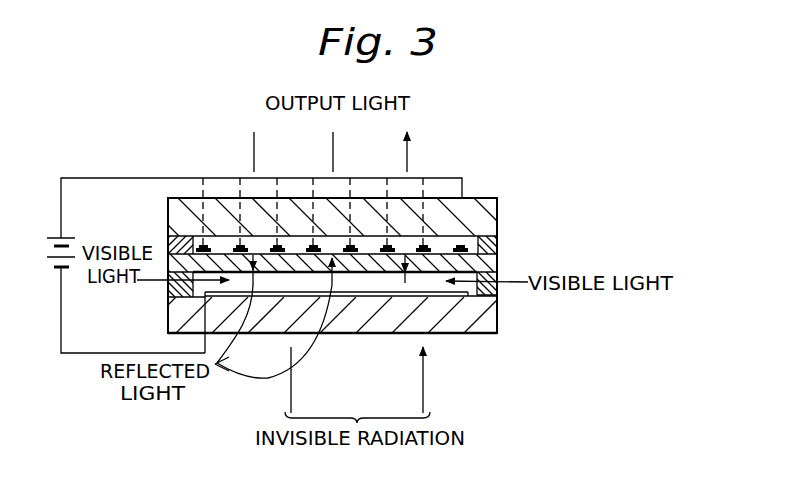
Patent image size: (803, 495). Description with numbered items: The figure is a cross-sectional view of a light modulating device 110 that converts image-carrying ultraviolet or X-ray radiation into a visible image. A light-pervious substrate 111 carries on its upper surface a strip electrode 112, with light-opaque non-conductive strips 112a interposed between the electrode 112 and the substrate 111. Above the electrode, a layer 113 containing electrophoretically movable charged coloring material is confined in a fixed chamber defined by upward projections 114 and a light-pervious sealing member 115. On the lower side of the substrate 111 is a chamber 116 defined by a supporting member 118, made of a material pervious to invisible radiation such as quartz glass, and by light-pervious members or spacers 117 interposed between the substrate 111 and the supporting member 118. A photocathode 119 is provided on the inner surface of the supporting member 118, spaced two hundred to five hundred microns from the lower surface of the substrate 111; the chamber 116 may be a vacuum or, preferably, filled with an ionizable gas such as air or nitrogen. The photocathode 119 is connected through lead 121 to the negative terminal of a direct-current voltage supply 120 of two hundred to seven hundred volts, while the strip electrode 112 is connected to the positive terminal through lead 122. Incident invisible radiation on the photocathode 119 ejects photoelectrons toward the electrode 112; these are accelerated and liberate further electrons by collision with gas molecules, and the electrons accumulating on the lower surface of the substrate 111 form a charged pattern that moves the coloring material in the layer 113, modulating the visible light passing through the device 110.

The light modulating device 110 is at (193, 128).
The light-pervious substrate 111 is at (494, 257).
The strip electrode 112 is at (303, 252).
The light-opaque non-conductive strips 112a is at (293, 256).
The layer 113 is at (443, 248).
The upward projections 114 is at (482, 240).
The light-pervious sealing member 115 is at (470, 203).
The chamber 116 is at (433, 303).
The light-pervious members or spacers 117 is at (490, 293).
The supporting member 118 is at (460, 333).
The photocathode 119 is at (496, 332).
The direct-current voltage supply 120 is at (77, 240).
The lead 121 is at (123, 353).
The lead 122 is at (140, 178).